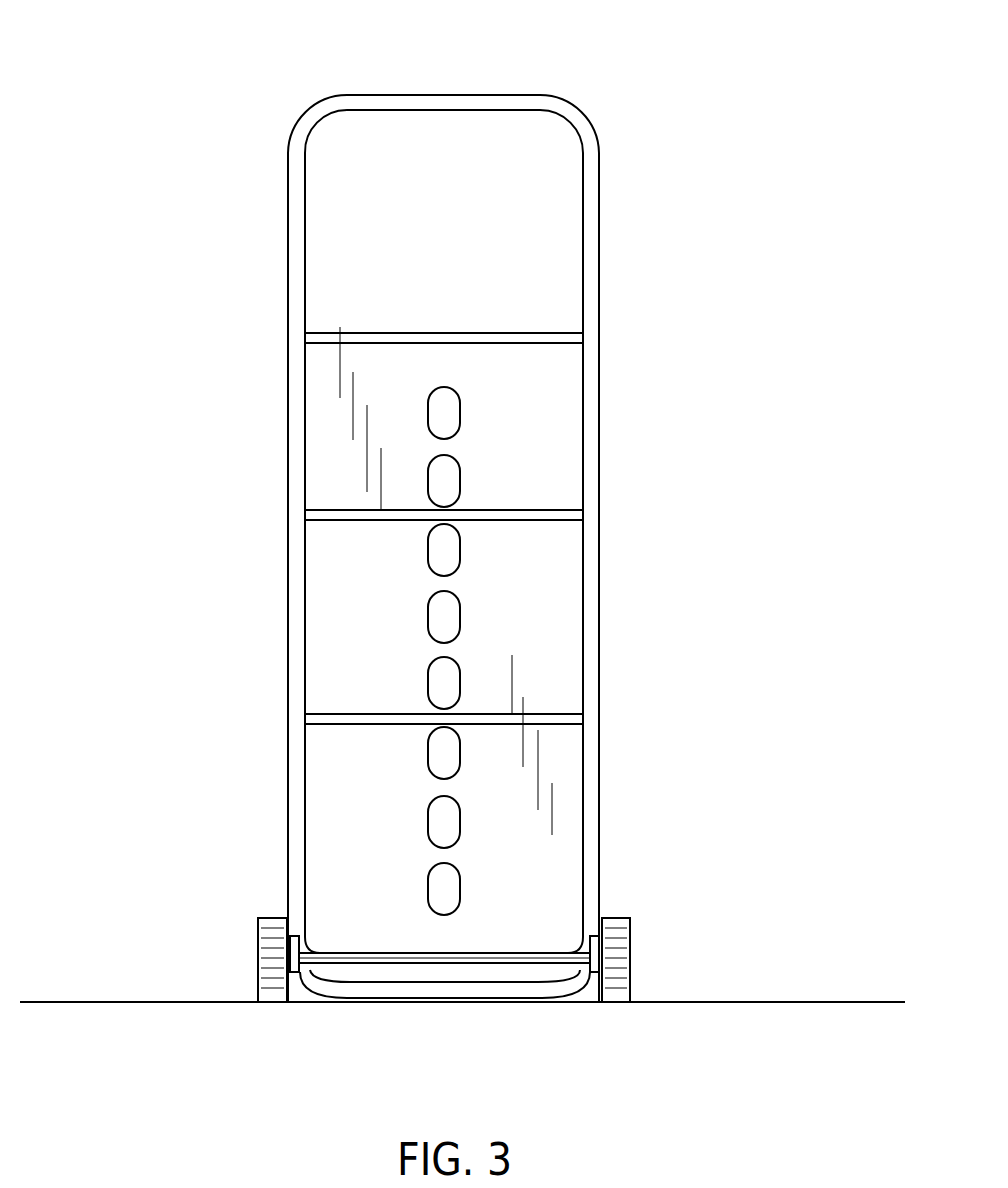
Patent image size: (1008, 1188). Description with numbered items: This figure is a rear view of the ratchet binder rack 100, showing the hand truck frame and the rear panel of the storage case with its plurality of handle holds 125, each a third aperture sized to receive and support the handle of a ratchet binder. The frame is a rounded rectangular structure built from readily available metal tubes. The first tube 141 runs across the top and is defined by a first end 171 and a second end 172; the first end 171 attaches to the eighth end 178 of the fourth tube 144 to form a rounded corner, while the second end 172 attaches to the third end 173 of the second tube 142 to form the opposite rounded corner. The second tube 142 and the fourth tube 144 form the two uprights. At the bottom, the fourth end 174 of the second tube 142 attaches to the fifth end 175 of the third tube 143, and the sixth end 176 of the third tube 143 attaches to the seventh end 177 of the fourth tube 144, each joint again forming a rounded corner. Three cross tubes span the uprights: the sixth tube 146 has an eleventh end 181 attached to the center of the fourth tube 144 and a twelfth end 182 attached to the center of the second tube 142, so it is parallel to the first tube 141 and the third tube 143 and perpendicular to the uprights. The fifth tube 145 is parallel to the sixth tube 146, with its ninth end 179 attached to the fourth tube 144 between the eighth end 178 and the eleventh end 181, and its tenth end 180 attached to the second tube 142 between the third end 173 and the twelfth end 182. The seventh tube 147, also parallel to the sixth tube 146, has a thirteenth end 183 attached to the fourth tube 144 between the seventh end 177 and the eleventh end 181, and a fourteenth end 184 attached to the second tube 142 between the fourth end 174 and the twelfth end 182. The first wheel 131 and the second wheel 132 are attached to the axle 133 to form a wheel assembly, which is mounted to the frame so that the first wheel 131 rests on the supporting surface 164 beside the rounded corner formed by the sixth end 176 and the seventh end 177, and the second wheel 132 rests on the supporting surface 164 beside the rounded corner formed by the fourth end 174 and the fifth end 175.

The ratchet binder rack 100 is at (195, 190).
The handle holds 125 is at (427, 482).
The first wheel 131 is at (258, 967).
The second wheel 132 is at (630, 965).
The axle 133 is at (407, 955).
The first tube 141 is at (410, 95).
The second tube 142 is at (599, 373).
The third tube 143 is at (452, 998).
The fourth tube 144 is at (288, 623).
The fifth tube 145 is at (467, 333).
The sixth tube 146 is at (383, 520).
The seventh tube 147 is at (367, 725).
The supporting surface 164 is at (737, 1002).
The first end 171 is at (330, 105).
The second end 172 is at (550, 93).
The third end 173 is at (600, 153).
The fourth end 174 is at (592, 925).
The fifth end 175 is at (570, 990).
The sixth end 176 is at (325, 999).
The seventh end 177 is at (298, 918).
The eighth end 178 is at (288, 175).
The ninth end 179 is at (318, 333).
The tenth end 180 is at (566, 333).
The eleventh end 181 is at (315, 510).
The twelfth end 182 is at (570, 510).
The thirteenth end 183 is at (318, 714).
The fourteenth end 184 is at (568, 714).